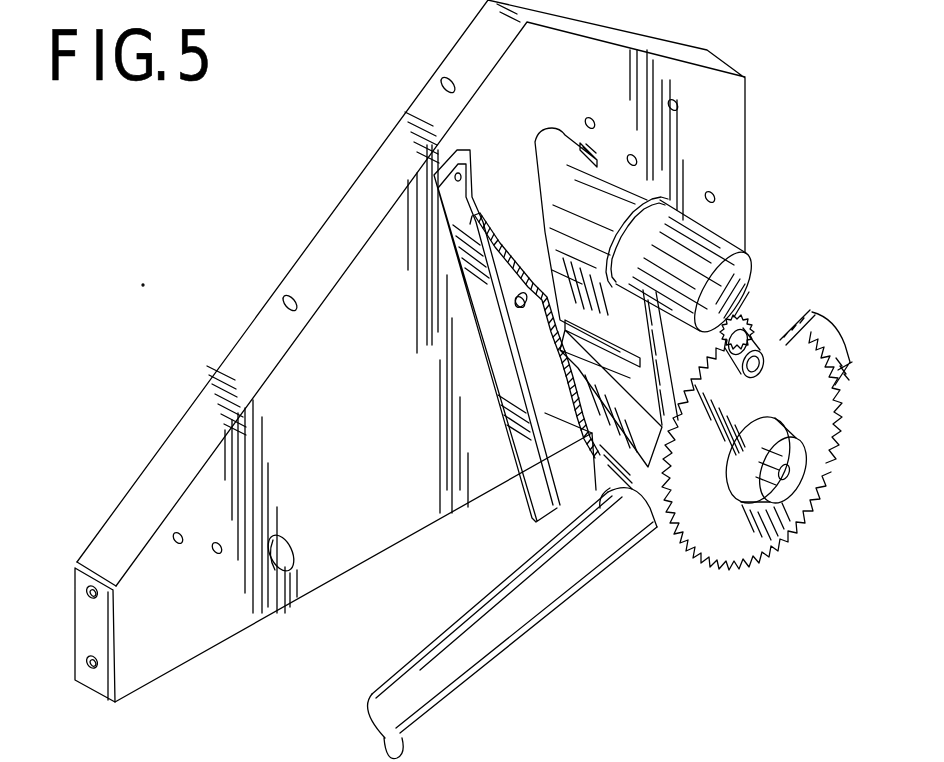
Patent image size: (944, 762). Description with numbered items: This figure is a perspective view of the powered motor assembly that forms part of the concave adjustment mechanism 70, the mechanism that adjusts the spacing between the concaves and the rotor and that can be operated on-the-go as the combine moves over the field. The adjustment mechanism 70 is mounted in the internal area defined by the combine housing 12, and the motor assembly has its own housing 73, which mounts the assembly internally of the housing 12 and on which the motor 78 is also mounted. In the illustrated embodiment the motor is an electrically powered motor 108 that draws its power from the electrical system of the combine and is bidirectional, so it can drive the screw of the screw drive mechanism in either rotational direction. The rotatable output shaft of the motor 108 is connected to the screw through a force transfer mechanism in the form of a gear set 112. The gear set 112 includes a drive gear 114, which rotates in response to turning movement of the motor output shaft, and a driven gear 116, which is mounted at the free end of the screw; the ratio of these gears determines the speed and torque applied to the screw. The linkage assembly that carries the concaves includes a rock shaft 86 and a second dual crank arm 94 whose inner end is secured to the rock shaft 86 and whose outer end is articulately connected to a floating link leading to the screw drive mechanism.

The housing 12 is at (727, 112).
The housing 73 is at (497, 358).
The motor 78 is at (722, 236).
The electrically powered motor 108 is at (570, 206).
The drive gear 114 is at (757, 334).
The gear set 112 is at (735, 567).
The driven gear 116 is at (800, 490).
The rock shaft 86 is at (512, 618).
The second dual crank arm 94 is at (567, 520).
The concave adjustment mechanism 70 is at (636, 598).